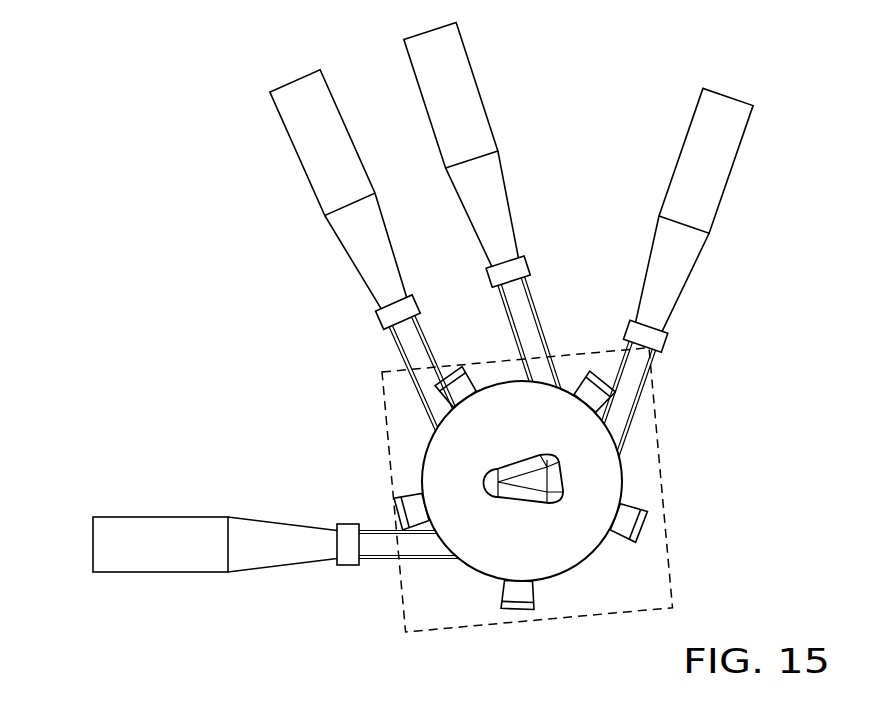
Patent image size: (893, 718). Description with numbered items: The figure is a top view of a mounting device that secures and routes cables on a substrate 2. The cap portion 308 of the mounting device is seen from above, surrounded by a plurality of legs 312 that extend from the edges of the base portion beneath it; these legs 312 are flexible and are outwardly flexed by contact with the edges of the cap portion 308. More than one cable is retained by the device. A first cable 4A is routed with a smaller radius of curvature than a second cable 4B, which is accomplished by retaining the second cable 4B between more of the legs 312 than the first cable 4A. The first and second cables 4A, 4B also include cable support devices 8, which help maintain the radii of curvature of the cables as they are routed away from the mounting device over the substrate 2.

The substrate 2 is at (405, 632).
The first cable 4A is at (728, 112).
The second cable 4B is at (462, 78).
The cable support device 8 is at (405, 352).
The cap portion 308 is at (615, 478).
The plurality of legs 312 is at (458, 372).